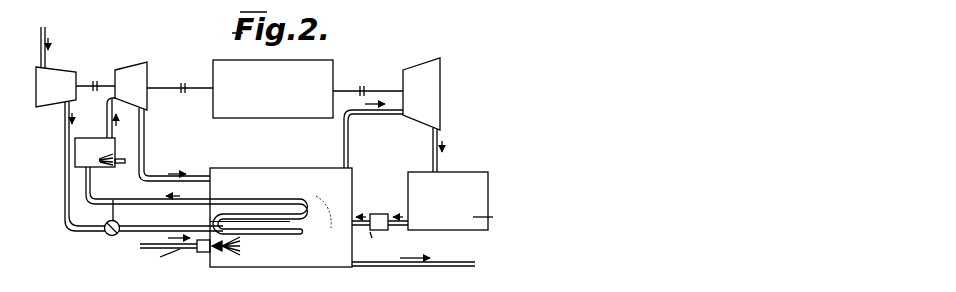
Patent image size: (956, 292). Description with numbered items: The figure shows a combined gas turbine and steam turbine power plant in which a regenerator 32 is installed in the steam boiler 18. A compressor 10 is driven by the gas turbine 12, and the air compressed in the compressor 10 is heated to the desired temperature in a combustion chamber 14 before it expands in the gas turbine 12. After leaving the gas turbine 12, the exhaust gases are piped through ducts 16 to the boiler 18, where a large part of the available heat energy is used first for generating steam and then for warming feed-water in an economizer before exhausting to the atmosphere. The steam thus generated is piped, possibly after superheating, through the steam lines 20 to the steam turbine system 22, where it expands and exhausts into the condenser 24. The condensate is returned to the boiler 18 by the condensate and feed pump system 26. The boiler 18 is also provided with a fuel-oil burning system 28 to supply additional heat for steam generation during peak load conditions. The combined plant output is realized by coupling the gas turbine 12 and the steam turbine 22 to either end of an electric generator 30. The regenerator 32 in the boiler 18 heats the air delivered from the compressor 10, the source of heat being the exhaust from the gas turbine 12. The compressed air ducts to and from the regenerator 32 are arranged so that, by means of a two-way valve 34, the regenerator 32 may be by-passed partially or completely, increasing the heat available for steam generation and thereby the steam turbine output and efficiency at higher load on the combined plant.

The compressor 10 is at (53, 73).
The gas turbine 12 is at (126, 73).
The combustion chamber 14 is at (119, 152).
The ducts 16 is at (146, 148).
The boiler 18 is at (263, 173).
The steam lines 20 is at (349, 150).
The steam turbine system 22 is at (421, 72).
The condenser 24 is at (455, 178).
The condensate and feed pump system 26 is at (379, 216).
The fuel-oil burning system 28 is at (202, 253).
The electric generator 30 is at (251, 67).
The regenerator 32 is at (217, 218).
The two-way valve 34 is at (118, 223).